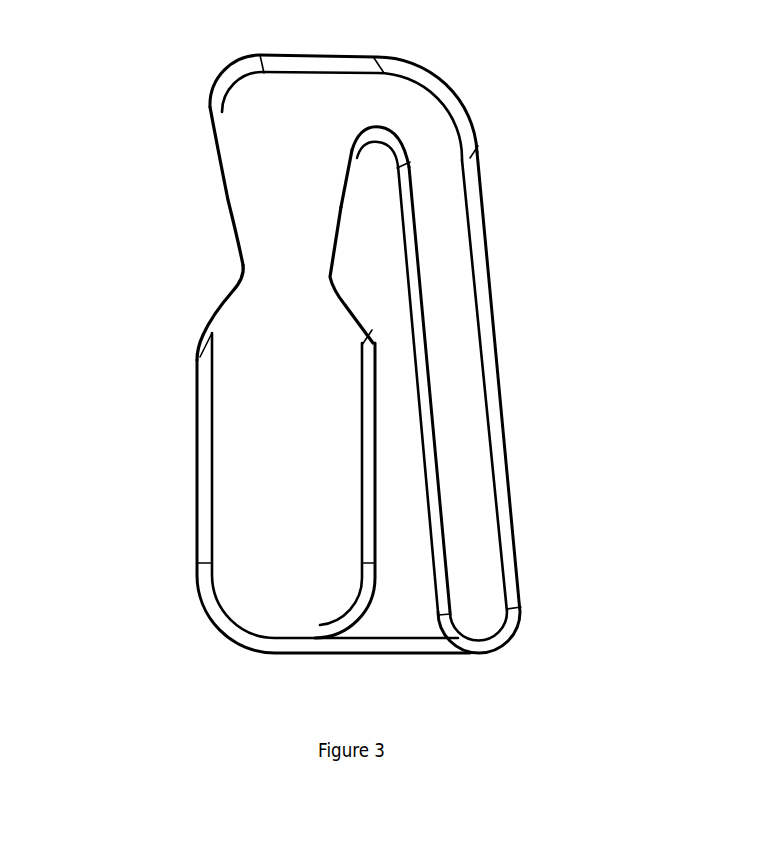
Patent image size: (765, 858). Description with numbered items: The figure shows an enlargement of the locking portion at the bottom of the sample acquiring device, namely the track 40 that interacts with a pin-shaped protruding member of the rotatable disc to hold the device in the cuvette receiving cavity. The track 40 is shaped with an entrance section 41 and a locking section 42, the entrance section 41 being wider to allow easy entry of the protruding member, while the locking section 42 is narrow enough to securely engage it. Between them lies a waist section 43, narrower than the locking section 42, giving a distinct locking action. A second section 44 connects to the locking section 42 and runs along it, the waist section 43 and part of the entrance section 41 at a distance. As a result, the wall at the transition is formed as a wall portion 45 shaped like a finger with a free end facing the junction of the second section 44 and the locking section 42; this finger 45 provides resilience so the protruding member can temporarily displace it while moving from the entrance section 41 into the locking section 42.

The track 40 is at (204, 220).
The entrance section 41 is at (276, 403).
The locking section 42 is at (295, 154).
The waist section 43 is at (263, 266).
The second section 44 is at (475, 484).
The wall portion (finger) 45 is at (386, 234).